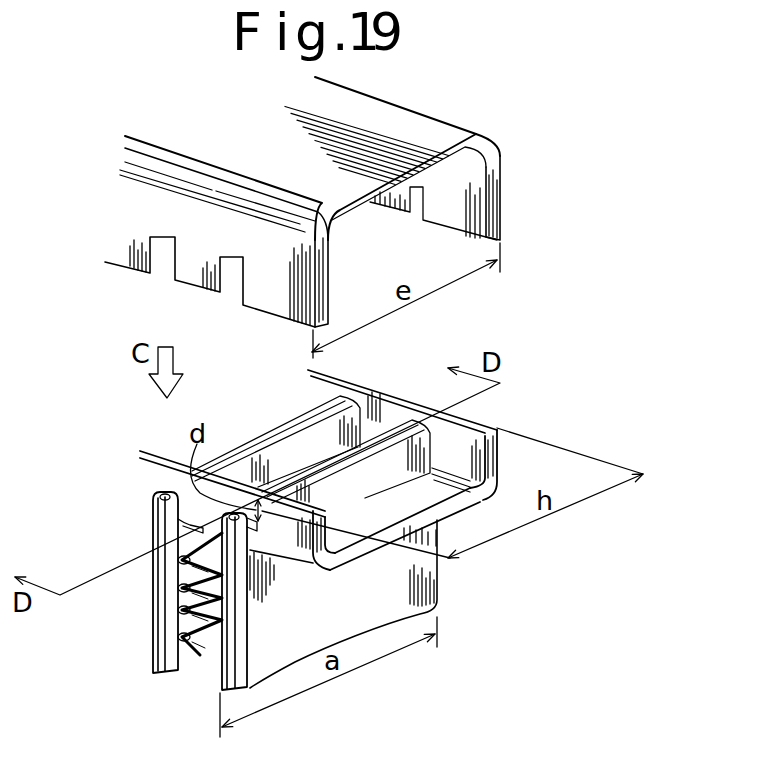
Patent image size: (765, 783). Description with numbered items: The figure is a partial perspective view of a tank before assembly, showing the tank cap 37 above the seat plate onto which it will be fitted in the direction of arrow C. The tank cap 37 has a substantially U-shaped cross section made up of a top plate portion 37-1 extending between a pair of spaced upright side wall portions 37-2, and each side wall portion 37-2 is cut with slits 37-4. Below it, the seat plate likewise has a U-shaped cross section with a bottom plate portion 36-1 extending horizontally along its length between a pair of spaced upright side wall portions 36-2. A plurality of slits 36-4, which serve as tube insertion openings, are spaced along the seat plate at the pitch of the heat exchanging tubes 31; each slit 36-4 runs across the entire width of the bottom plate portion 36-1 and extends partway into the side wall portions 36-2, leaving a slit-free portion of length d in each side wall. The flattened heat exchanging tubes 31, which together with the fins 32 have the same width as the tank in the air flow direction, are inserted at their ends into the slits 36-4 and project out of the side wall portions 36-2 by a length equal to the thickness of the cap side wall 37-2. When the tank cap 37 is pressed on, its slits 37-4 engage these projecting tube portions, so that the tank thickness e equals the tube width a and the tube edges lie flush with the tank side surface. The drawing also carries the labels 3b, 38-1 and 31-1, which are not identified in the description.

The tank cap 37 is at (365, 216).
The top plate portion 37-1 is at (383, 117).
The side wall portion 37-2 is at (501, 166).
The slit 37-4 is at (227, 293).
The shield case 3b is at (379, 526).
The bottom plate portion 36-1 is at (420, 504).
The side wall portion 36-2 is at (493, 452).
The slit (tube insertion opening) 36-4 is at (297, 563).
The positioning bar 38-1 is at (152, 522).
The fin 32 is at (200, 658).
The heat exchanging tube 31 is at (295, 623).
The front surface of housing 31-1 is at (247, 532).